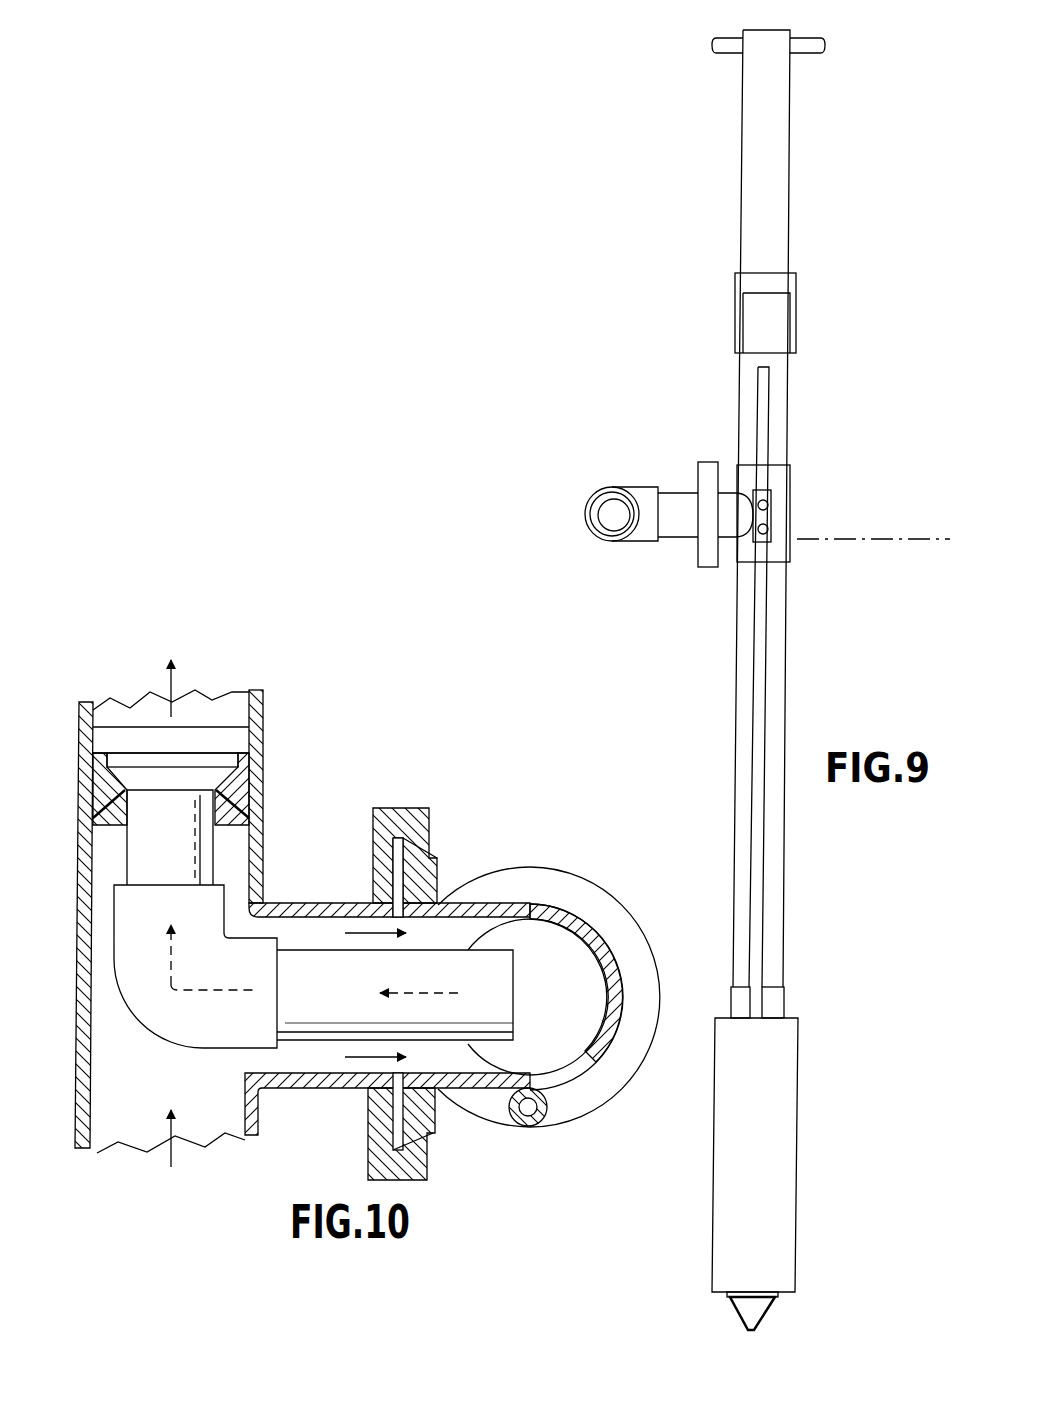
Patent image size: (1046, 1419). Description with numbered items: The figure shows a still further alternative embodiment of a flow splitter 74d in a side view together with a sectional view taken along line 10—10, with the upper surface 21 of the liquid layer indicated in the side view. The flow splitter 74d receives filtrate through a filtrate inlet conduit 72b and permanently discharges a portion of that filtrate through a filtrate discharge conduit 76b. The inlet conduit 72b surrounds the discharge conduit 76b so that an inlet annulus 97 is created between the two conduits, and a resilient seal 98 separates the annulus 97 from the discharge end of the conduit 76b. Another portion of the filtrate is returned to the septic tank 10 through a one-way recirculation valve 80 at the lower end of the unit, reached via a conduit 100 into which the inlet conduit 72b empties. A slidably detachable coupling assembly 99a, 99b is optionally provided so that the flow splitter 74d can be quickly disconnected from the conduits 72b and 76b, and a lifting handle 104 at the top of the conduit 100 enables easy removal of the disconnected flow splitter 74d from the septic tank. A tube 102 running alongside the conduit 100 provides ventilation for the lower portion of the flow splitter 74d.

In FIG. 9, the lifting handle 104 is at (810, 36).
In FIG. 9, the conduit 100 is at (737, 752).
In FIG. 10, the conduit 100 is at (547, 905).
In FIG. 9, the tube 102 is at (768, 672).
In FIG. 10, the tube 102 is at (545, 1110).
In FIG. 9, the slidably detachable coupling assembly 99a is at (707, 568).
In FIG. 10, the slidably detachable coupling assembly 99a is at (398, 808).
In FIG. 10, the slidably detachable coupling assembly 99b is at (437, 1120).
In FIG. 9, the filtrate inlet conduit 72b is at (606, 487).
In FIG. 10, the filtrate inlet conduit 72b is at (122, 1130).
In FIG. 9, the filtrate discharge conduit 76b is at (614, 525).
In FIG. 10, the filtrate discharge conduit 76b is at (215, 867).
In FIG. 9, the septic tank 10 is at (543, 556).
In FIG. 9, the upper surface 21 is at (912, 536).
In FIG. 9, the one-way recirculation valve 80 is at (738, 1310).
In FIG. 10, the resilient seal 98 is at (243, 780).
In FIG. 10, the inlet annulus 97 is at (443, 935).
In FIG. 10, the flow splitter 74d is at (618, 870).